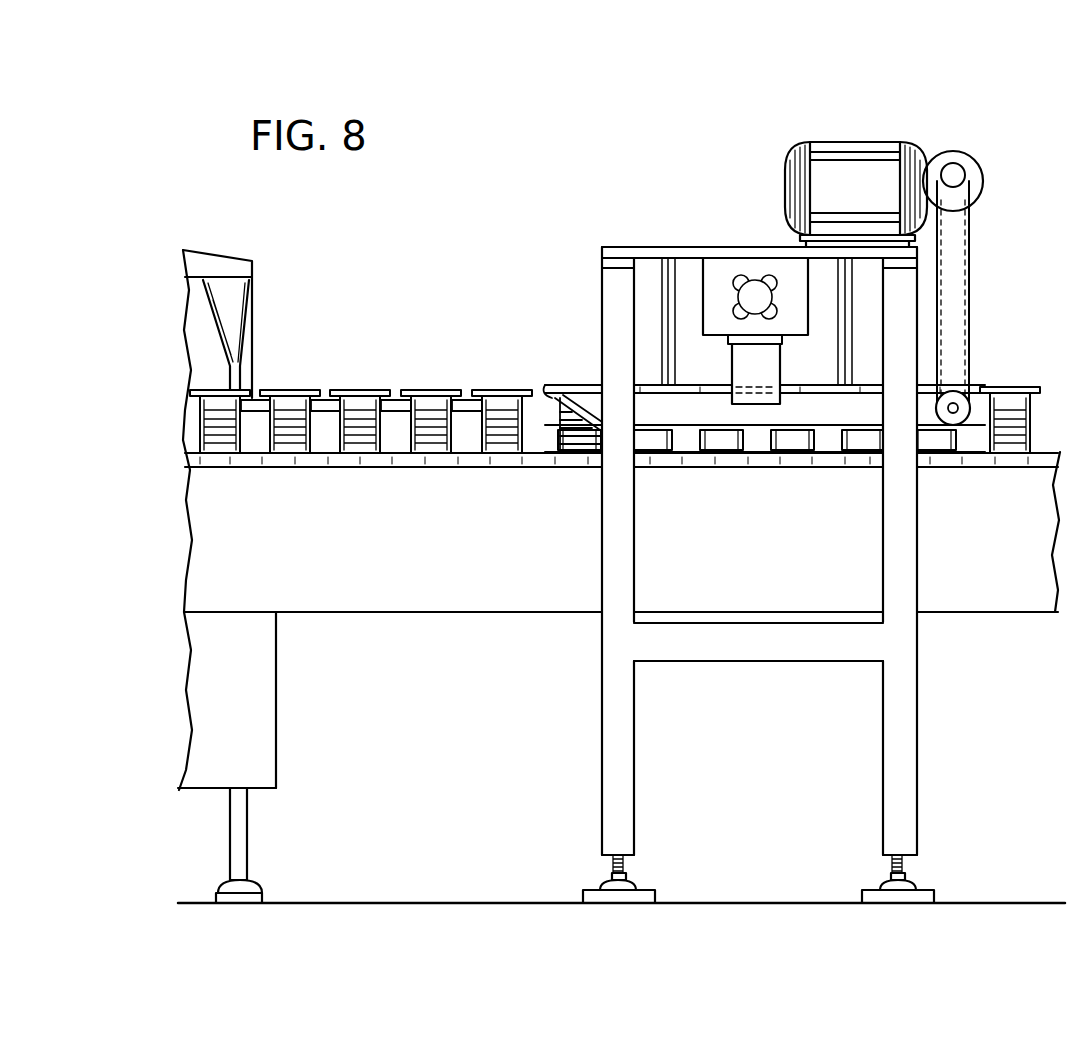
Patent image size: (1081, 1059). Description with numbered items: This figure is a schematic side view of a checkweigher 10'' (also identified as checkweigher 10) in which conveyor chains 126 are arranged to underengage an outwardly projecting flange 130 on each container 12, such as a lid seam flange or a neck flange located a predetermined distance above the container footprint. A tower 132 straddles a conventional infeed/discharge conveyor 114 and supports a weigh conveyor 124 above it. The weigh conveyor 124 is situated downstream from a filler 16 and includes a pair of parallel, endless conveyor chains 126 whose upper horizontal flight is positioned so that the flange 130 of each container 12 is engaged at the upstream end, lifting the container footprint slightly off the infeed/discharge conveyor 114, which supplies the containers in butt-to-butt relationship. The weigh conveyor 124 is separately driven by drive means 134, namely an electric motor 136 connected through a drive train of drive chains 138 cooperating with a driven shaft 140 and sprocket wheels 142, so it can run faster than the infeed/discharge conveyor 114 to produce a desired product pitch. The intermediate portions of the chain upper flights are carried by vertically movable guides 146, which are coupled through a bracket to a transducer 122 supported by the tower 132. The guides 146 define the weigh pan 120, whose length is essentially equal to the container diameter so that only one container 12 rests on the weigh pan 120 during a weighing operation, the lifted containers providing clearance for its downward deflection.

The checkweigher 10'' is at (629, 493).
The apparatus 10 is at (1072, 99).
The container 12 is at (497, 405).
The filler 16 is at (222, 293).
The infeed/discharge conveyor 114 is at (702, 415).
The weigh pan 120 is at (756, 405).
The transducer 122 is at (717, 290).
The weigh conveyor 124 is at (747, 443).
The conveyor chain 126 is at (542, 392).
The flange 130 is at (403, 395).
The tower 132 is at (607, 310).
The drive means 134 is at (992, 220).
The electric motor 136 is at (862, 140).
The drive chain 138 is at (975, 283).
The driven shaft 140 is at (952, 175).
The sprocket wheel 142 is at (955, 418).
The vertically movable guide 146 is at (757, 362).